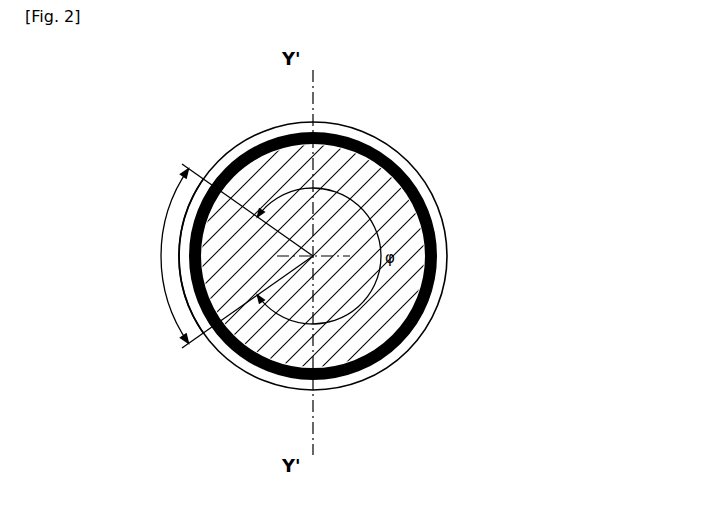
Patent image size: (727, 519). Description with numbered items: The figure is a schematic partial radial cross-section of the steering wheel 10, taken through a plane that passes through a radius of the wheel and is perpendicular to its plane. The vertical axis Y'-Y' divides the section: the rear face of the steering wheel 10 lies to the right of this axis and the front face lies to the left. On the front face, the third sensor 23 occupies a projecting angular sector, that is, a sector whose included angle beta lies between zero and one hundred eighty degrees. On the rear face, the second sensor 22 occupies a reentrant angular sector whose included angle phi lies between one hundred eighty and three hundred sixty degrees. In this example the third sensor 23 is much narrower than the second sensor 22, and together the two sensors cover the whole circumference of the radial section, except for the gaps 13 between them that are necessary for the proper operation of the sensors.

The steering wheel 10 is at (438, 200).
The second sensor 22 is at (417, 327).
The gaps 13 is at (206, 172).
The third sensor 23 is at (176, 203).